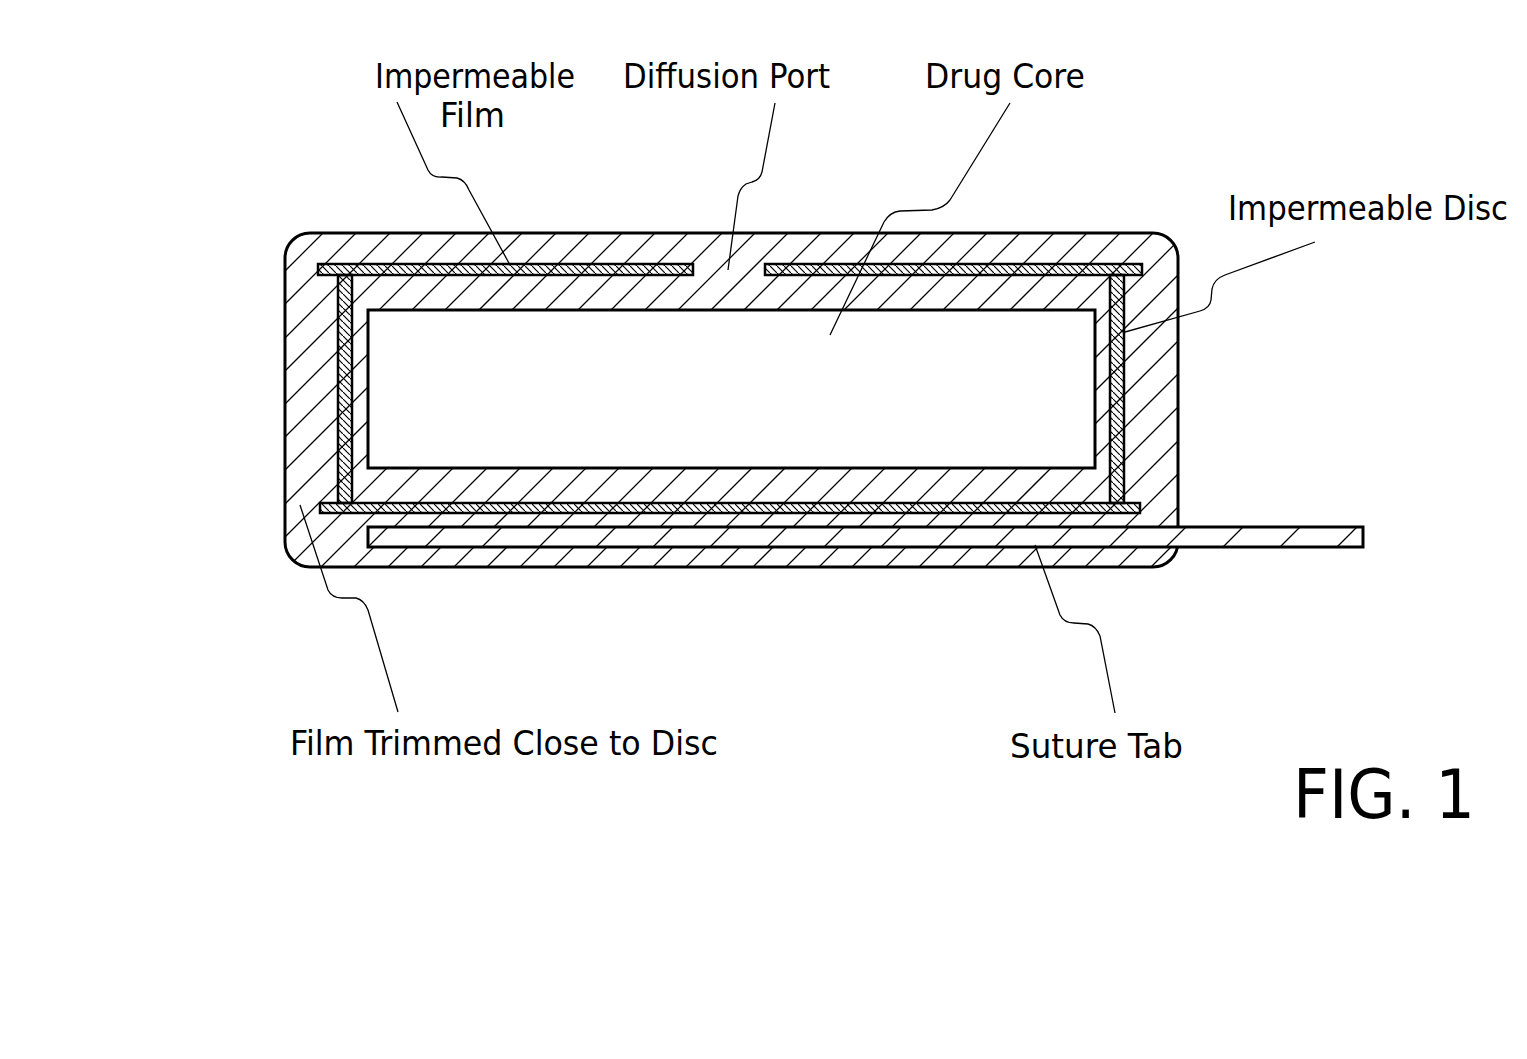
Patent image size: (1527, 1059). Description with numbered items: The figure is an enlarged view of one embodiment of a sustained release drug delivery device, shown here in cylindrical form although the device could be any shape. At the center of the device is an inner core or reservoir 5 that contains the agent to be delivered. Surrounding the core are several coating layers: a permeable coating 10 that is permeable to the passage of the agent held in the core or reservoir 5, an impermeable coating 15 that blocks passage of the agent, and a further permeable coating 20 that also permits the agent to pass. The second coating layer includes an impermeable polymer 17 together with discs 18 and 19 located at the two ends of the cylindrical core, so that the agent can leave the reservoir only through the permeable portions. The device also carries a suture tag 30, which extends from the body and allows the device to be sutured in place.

The inner core or reservoir 5 is at (692, 452).
The permeable coating 10 is at (845, 483).
The impermeable coating 15 is at (360, 268).
The impermeable polymer 17 is at (440, 495).
The disc 18 is at (340, 445).
The disc 19 is at (1125, 437).
The permeable coating 20 is at (318, 476).
The suture tag 30 is at (1297, 548).